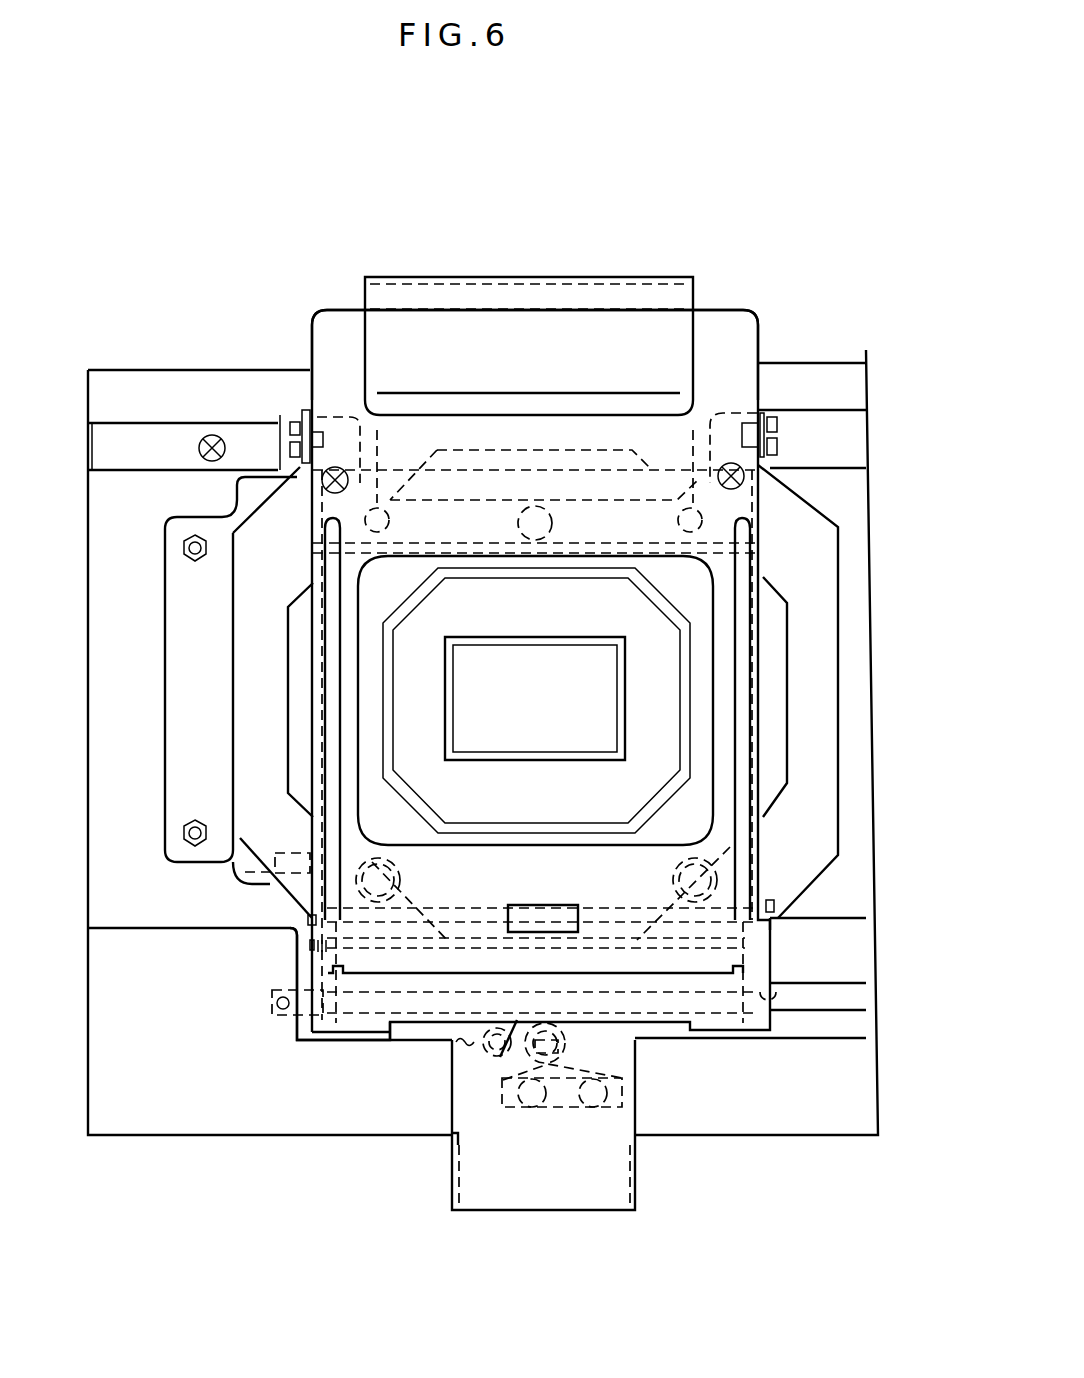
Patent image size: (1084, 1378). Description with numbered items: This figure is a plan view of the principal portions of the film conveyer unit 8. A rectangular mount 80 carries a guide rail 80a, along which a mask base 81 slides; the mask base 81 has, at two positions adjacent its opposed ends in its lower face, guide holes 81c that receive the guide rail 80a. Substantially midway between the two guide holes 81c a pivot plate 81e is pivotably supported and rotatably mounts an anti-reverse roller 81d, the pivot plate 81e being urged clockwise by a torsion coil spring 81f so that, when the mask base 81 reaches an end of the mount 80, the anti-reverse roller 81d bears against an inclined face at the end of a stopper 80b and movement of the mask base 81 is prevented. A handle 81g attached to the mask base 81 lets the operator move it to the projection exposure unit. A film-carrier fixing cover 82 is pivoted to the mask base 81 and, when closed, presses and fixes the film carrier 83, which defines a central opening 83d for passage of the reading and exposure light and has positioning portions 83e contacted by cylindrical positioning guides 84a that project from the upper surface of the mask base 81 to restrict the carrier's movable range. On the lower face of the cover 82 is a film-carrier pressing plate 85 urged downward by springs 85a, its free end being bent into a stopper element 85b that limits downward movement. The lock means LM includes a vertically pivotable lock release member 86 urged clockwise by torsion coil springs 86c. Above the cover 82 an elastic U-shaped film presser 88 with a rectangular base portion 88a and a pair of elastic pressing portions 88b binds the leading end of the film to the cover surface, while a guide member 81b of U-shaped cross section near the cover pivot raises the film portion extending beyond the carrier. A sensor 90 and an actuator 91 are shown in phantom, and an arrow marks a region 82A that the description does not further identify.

The film conveyer unit 8 is at (187, 360).
The mount 80 is at (238, 1140).
The guide rail 80a is at (822, 1000).
The stopper 80b is at (637, 1073).
The mask base 81 is at (813, 498).
The guide member 81b is at (692, 290).
The guide holes 81c is at (310, 992).
The anti-reverse roller 81d is at (565, 1047).
The pivot plate 81e is at (517, 1050).
The torsion coil spring 81f is at (485, 1036).
The handle 81g is at (613, 1177).
The film-carrier fixing cover 82 is at (308, 843).
The holder frame 82A is at (412, 636).
The film carrier 83 is at (288, 693).
The opening 83d is at (565, 663).
The positioning portions 83e is at (364, 530).
The positioning guides 84a is at (372, 500).
The film-carrier pressing plate 85 is at (548, 470).
The springs 85a is at (402, 880).
The stopper element 85b is at (552, 905).
The lock release member 86 is at (340, 1024).
The torsion coil springs 86c is at (308, 917).
The film presser 88 is at (333, 313).
The base portion 88a is at (740, 342).
The elastic pressing portions 88b is at (335, 745).
The sensor 90 is at (230, 882).
The actuator 91 is at (553, 522).
The lock means LM is at (280, 947).